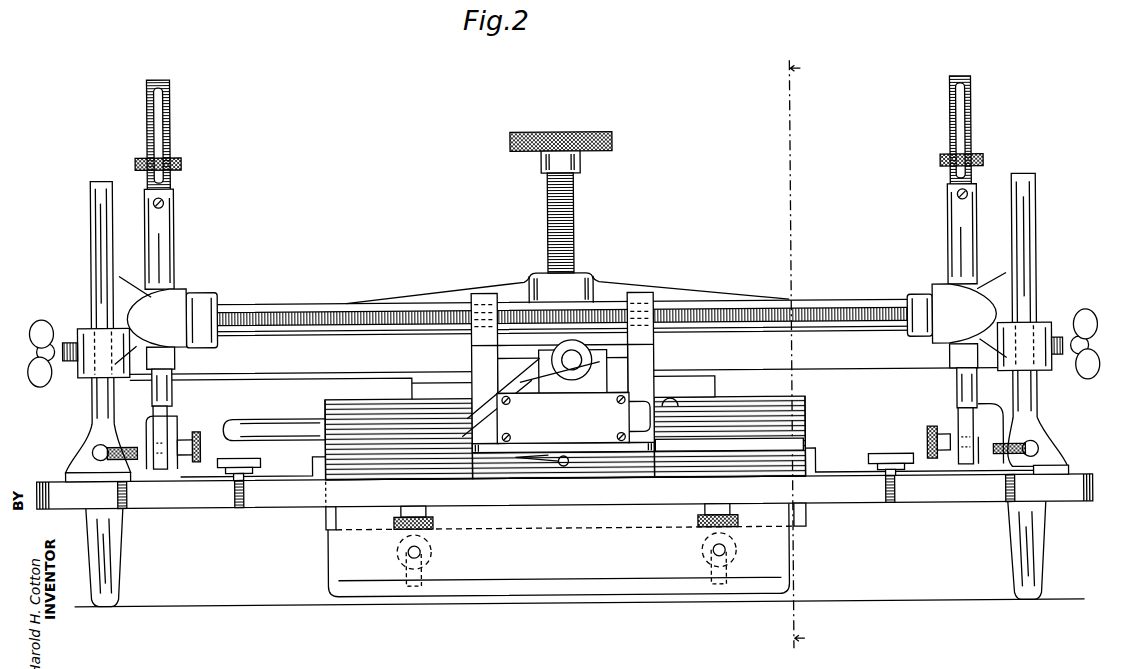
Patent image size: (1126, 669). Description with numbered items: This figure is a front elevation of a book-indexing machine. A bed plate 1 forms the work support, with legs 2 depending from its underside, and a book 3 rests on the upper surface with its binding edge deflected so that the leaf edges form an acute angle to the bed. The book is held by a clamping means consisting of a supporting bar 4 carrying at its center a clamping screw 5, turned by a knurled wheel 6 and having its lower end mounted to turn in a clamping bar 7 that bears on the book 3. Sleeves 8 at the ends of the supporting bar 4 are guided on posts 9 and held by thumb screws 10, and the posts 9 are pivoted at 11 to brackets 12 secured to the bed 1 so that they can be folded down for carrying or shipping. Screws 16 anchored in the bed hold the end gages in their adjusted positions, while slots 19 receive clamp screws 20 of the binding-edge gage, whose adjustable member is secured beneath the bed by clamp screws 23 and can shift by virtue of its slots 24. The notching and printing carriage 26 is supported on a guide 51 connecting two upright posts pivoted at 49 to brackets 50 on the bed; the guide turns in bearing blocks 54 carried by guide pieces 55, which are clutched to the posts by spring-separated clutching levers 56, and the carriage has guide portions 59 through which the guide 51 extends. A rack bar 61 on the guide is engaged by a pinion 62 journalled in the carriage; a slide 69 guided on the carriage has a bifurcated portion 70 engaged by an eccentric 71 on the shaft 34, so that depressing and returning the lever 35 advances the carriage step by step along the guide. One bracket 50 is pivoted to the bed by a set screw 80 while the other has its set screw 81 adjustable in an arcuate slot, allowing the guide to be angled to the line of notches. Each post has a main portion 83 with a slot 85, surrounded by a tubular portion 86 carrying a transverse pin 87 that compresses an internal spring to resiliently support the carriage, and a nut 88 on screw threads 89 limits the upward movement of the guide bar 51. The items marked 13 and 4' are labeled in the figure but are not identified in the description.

The bed plate 1 is at (270, 506).
The legs 2 is at (118, 548).
The book 3 is at (806, 406).
The supporting bar 4 is at (802, 354).
The belt 4' is at (567, 281).
The clamping screw 5 is at (576, 236).
The knurled wheel 6 is at (598, 150).
The clamping bar 7 is at (438, 382).
The sleeves 8 is at (85, 325).
The posts 9 is at (96, 233).
The thumb screws 10 is at (37, 346).
The pivot 11 is at (92, 440).
The brackets 12 is at (68, 470).
The bracket 13 is at (312, 465).
The screws 16 is at (238, 457).
The slots 19 is at (412, 588).
The clamp screws 20 is at (430, 556).
The clamp screws 23 is at (425, 518).
The slots 24 is at (403, 507).
The carriage 26 is at (660, 371).
The shaft 34 is at (566, 375).
The lever 35 is at (288, 418).
The pivot 49 is at (177, 425).
The brackets 50 is at (150, 488).
The guide 51 is at (275, 302).
The bearing blocks 54 is at (210, 290).
The guide pieces 55 is at (180, 342).
The clutching levers 56 is at (124, 275).
The guide portions 59 is at (486, 293).
The rack bar 61 is at (368, 333).
The pinion 62 is at (612, 310).
The slide 69 is at (640, 402).
The bifurcated portion 70 is at (605, 398).
The eccentric 71 is at (582, 380).
The set screw 80 is at (125, 445).
The set screw 81 is at (1005, 447).
The main portion 83 is at (172, 386).
The slot 85 is at (165, 182).
The tubular portion 86 is at (176, 361).
The transverse pin 87 is at (166, 199).
The nut 88 is at (183, 156).
The screw threads 89 is at (149, 121).